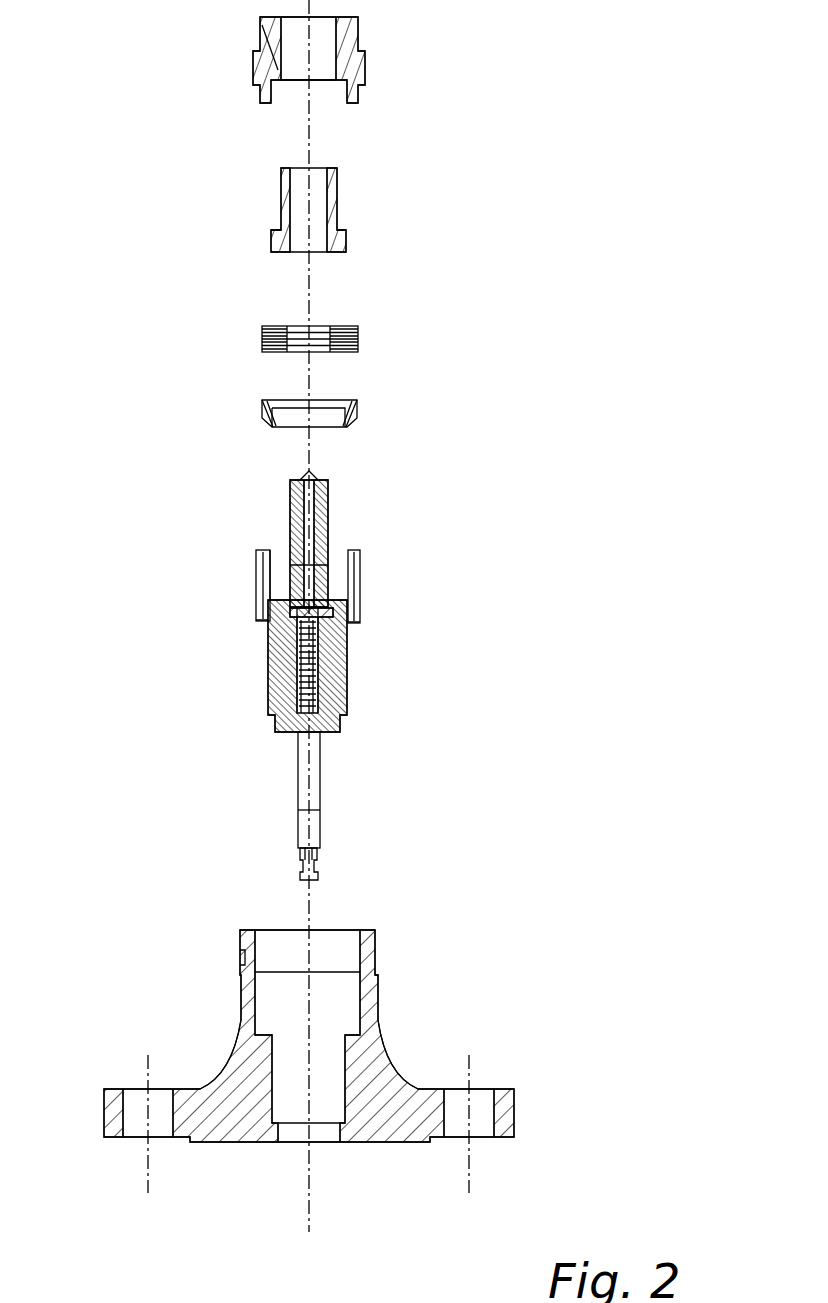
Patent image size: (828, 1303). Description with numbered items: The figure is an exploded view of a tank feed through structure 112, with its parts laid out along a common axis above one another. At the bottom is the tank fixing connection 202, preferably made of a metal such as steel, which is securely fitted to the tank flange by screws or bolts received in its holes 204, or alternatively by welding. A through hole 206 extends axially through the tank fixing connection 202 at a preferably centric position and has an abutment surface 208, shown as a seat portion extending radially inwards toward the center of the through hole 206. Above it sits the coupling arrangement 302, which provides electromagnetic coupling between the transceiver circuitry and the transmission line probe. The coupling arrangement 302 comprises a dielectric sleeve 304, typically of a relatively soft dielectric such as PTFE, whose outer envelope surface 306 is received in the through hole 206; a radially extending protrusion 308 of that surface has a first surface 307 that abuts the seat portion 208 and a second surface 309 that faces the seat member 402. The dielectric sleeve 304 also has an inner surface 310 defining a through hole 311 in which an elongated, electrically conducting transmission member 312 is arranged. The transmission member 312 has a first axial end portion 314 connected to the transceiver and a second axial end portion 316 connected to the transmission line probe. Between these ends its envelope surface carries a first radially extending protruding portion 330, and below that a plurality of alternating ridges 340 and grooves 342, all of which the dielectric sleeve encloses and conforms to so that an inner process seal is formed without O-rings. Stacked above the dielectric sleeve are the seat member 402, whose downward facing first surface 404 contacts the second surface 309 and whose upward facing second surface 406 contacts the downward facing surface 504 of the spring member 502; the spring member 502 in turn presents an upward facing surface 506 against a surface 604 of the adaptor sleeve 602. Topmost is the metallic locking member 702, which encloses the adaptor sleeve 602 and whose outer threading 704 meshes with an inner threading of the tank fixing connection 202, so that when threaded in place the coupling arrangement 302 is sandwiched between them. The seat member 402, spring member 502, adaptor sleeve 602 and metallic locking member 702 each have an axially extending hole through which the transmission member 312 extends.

The tank feed through structure 112 is at (355, 640).
The tank fixing connection 202 is at (309, 1007).
The holes 204 is at (133, 1090).
The through hole 206 is at (322, 995).
The abutment surface 208 is at (265, 1030).
The coupling arrangement 302 is at (289, 640).
The dielectric sleeve 304 is at (325, 667).
The outer envelope surface 306 is at (348, 640).
The first surface 307 is at (262, 627).
The radially extending protrusion 308 is at (267, 557).
The second surface 309 is at (272, 600).
The inner surface 310 is at (381, 504).
The through hole 311 is at (312, 562).
The transmission member 312 is at (368, 800).
The first axial end portion 314 is at (310, 478).
The second axial end portion 316 is at (318, 855).
The first radially extending protruding portion 330 is at (330, 598).
The ridges 340 is at (309, 692).
The grooves 342 is at (320, 670).
The seat member 402 is at (317, 418).
The first surface 404 is at (262, 427).
The second surface 406 is at (278, 406).
The spring member 502 is at (292, 319).
The downward facing surface 504 is at (267, 352).
The upward facing surface 506 is at (272, 327).
The adaptor sleeve 602 is at (348, 238).
The surface 604 is at (292, 254).
The metallic locking member 702 is at (311, 62).
The outer threading 704 is at (256, 62).